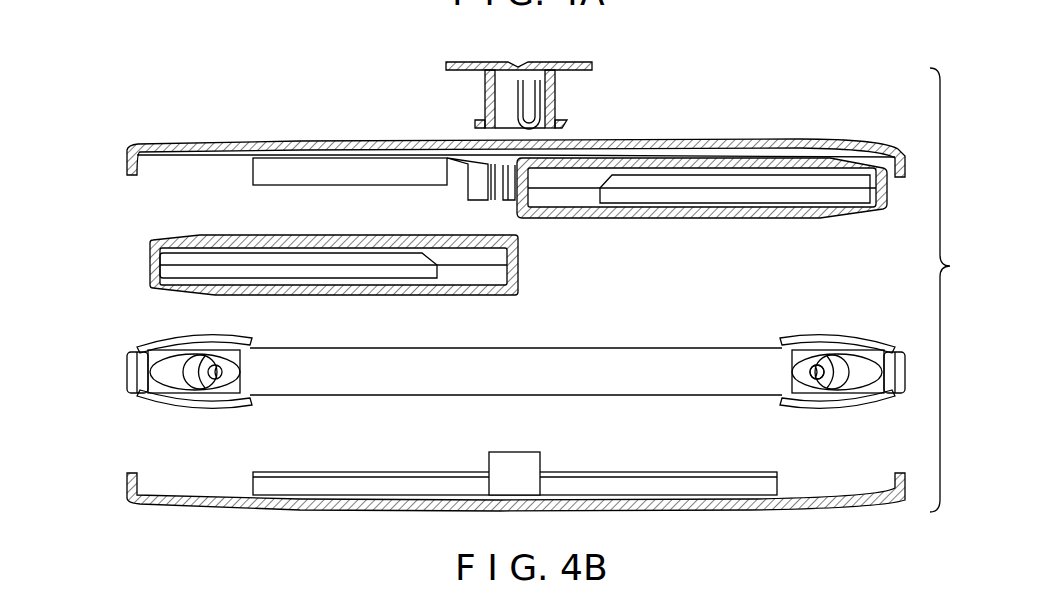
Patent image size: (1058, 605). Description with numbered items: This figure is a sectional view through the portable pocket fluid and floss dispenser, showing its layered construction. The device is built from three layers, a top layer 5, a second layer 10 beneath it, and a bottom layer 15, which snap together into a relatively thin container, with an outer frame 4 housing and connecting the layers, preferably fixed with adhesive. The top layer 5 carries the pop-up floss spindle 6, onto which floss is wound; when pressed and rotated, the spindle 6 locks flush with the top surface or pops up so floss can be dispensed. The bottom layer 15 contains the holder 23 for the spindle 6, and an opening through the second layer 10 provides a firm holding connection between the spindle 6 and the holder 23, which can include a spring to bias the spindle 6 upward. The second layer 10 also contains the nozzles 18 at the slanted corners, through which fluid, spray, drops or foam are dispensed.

The floss spindle 6 is at (556, 62).
The top layer 5 is at (122, 162).
The outer frame 4 is at (152, 264).
The second layer 10 is at (126, 368).
The nozzle 18 is at (813, 376).
The bottom layer 15 is at (122, 483).
The holder 23 is at (530, 452).